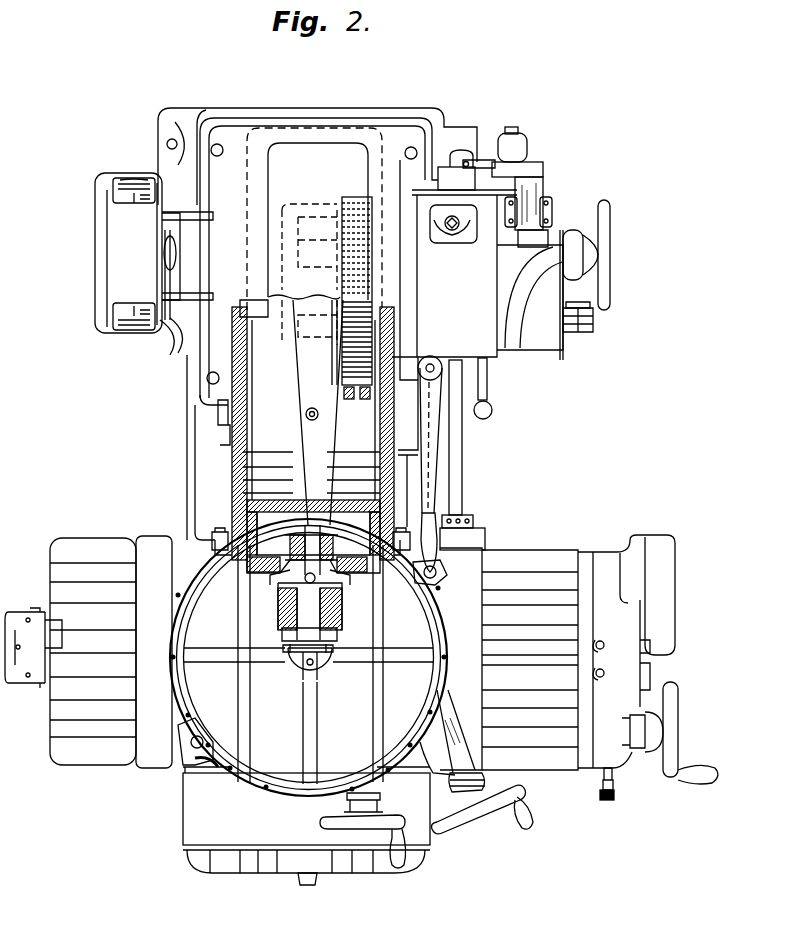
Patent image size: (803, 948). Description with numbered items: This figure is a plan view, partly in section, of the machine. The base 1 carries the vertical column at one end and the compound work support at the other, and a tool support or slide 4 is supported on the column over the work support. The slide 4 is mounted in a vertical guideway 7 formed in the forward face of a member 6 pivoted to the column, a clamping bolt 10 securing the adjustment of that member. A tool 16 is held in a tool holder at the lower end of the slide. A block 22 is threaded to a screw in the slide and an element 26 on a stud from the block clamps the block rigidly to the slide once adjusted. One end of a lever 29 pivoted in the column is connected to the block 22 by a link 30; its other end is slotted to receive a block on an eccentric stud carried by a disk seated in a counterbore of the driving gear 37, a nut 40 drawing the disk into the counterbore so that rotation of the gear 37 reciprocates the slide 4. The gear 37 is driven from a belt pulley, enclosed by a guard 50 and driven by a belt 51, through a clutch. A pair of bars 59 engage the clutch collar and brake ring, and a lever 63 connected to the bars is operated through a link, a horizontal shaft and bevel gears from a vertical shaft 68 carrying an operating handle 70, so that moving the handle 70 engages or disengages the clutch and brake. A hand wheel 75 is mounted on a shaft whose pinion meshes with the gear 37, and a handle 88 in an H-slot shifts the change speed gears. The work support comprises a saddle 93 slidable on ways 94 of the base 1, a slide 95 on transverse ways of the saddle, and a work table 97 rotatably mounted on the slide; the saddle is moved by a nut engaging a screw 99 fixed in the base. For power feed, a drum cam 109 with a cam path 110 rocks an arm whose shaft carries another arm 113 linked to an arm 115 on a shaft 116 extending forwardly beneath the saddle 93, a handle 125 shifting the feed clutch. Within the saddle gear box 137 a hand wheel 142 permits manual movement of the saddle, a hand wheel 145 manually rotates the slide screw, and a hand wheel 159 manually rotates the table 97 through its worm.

The base 1 is at (385, 115).
The tool support or slide 4 is at (338, 586).
The member 6 is at (237, 522).
The vertical guideway 7 is at (255, 580).
The clamping bolt 10 is at (212, 540).
The tool 16 is at (306, 654).
The block 22 is at (300, 580).
The element 26 is at (322, 608).
The lever 29 is at (298, 445).
The link 30 is at (295, 540).
The driving gear 37 is at (345, 340).
The nut 40 is at (585, 340).
The guard 50 is at (115, 272).
The belt 51 is at (133, 182).
The bars 59 is at (163, 210).
The lever 63 is at (180, 345).
The vertical shaft 68 is at (432, 358).
The operating handle 70 is at (432, 440).
The hand wheel 75 is at (604, 222).
The handle 88 is at (490, 392).
The saddle 93 is at (78, 750).
The ways 94 is at (255, 862).
The slide 95 is at (177, 757).
The work table 97 is at (264, 758).
The screw 99 is at (307, 888).
The drum cam 109 is at (556, 355).
The cam path 110 is at (513, 293).
The arm 113 is at (537, 162).
The arm 115 is at (487, 162).
The shaft 116 is at (460, 475).
The handle 125 is at (617, 790).
The saddle gear box 137 is at (628, 612).
The hand wheel 142 is at (673, 695).
The hand wheel 145 is at (465, 792).
The hand wheel 159 is at (322, 825).